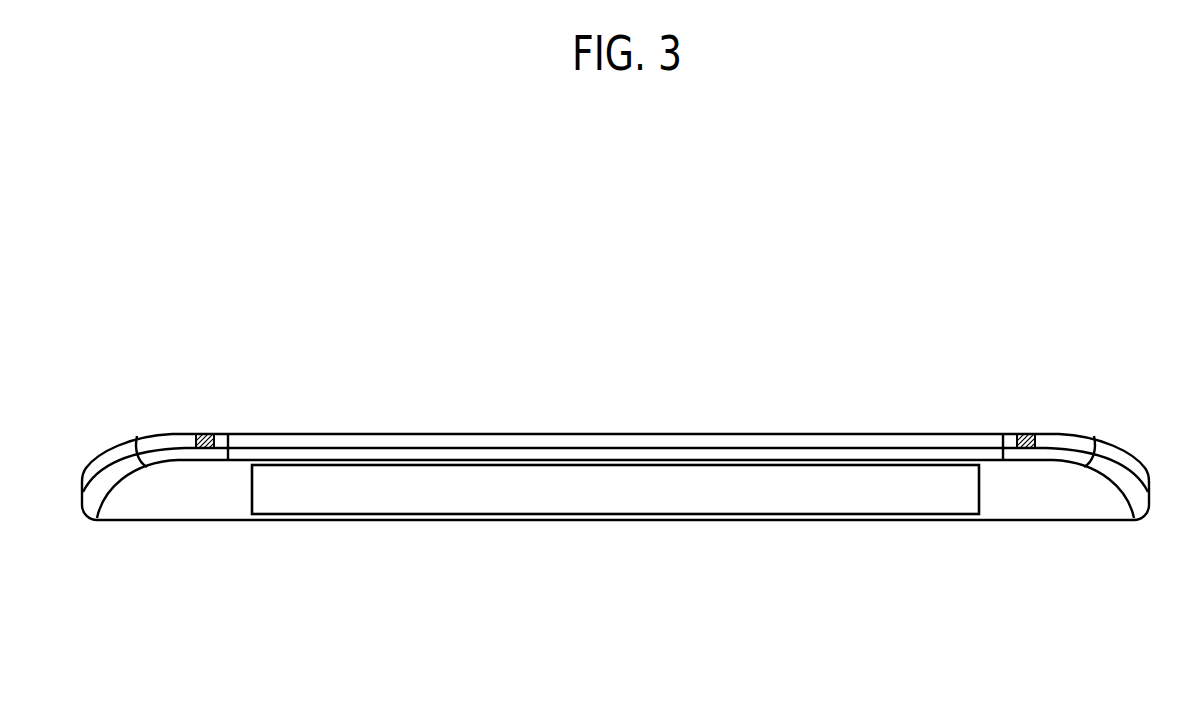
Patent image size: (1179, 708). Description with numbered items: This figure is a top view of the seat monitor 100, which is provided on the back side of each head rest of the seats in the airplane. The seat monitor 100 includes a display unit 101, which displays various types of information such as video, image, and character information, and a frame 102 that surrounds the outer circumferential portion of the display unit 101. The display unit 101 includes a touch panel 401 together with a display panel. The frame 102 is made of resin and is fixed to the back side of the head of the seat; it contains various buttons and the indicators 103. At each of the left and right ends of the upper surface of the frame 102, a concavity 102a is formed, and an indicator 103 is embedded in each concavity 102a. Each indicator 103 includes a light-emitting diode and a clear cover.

The seat monitor 100 is at (622, 418).
The display unit 101 is at (697, 502).
The touch panel 401 is at (615, 544).
The frame 102 is at (307, 438).
The concavity 102a is at (207, 432).
The indicator 103 is at (200, 432).